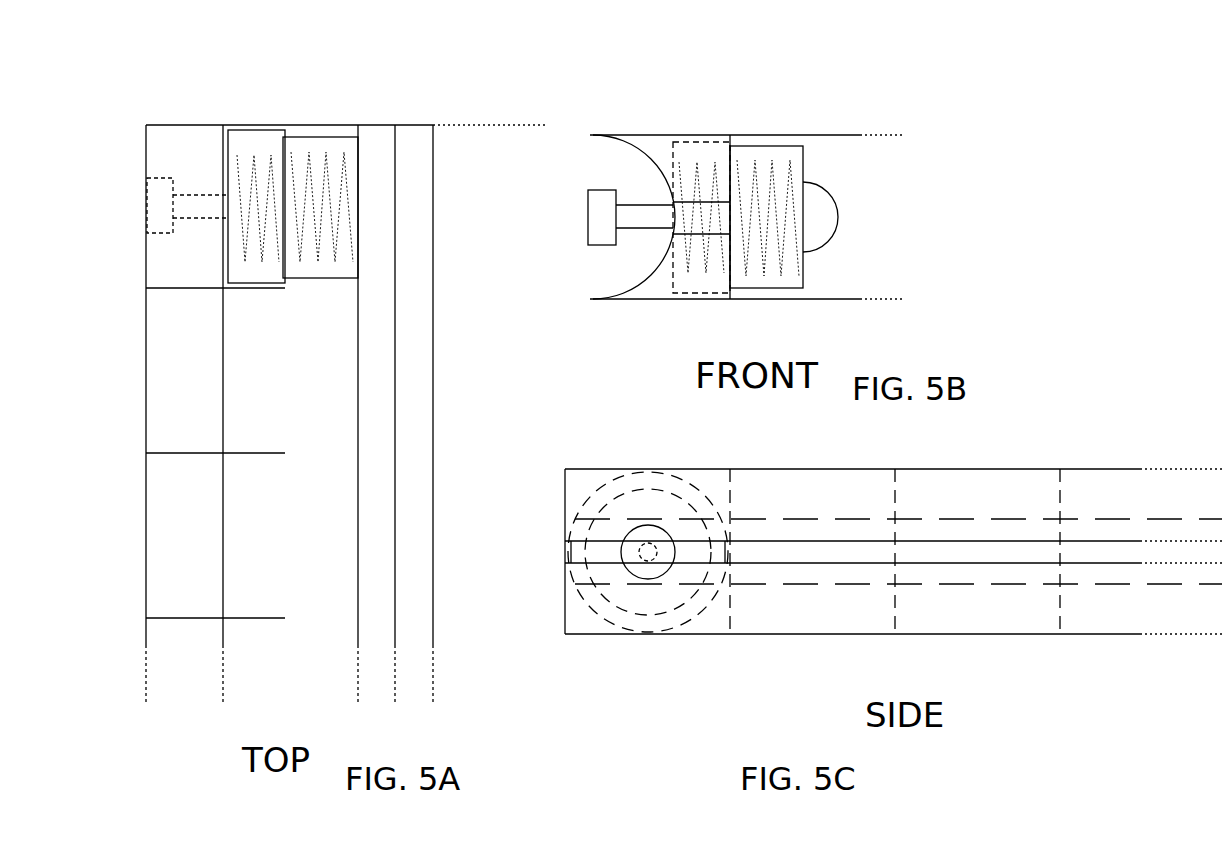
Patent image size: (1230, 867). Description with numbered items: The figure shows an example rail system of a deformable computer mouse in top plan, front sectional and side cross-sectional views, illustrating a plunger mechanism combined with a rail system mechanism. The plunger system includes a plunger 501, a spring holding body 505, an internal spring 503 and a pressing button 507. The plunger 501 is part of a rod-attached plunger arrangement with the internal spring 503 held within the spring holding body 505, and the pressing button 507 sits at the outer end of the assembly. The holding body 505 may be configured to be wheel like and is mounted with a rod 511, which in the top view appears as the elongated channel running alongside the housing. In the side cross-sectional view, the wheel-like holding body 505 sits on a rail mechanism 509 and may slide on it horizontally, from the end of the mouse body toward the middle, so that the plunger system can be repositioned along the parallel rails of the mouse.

In FIG. 5A, the plunger 501 is at (153, 213).
In FIG. 5B, the plunger 501 is at (610, 220).
In FIG. 5A, the internal spring 503 is at (300, 170).
In FIG. 5B, the internal spring 503 is at (753, 173).
In FIG. 5A, the spring holding body 505 is at (247, 147).
In FIG. 5B, the spring holding body 505 is at (701, 217).
In FIG. 5C, the spring holding body 505 is at (677, 600).
In FIG. 5B, the pressing button 507 is at (815, 205).
In FIG. 5C, the pressing button 507 is at (627, 567).
In FIG. 5C, the rail mechanism 509 is at (860, 563).
In FIG. 5A, the rod 511 is at (362, 386).